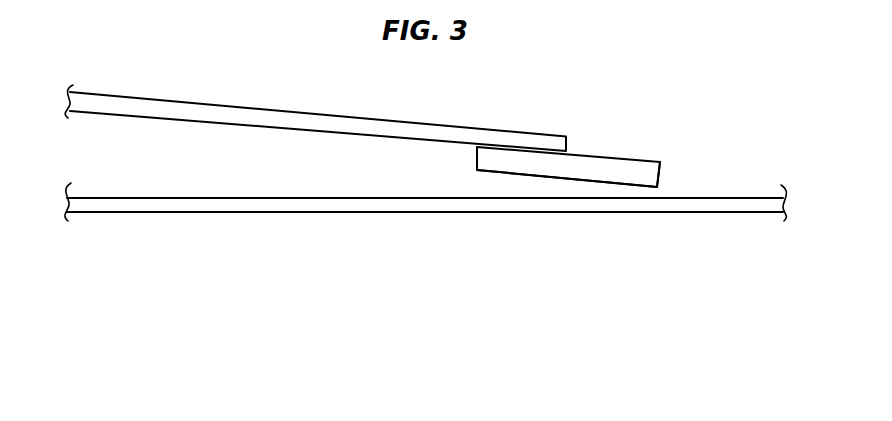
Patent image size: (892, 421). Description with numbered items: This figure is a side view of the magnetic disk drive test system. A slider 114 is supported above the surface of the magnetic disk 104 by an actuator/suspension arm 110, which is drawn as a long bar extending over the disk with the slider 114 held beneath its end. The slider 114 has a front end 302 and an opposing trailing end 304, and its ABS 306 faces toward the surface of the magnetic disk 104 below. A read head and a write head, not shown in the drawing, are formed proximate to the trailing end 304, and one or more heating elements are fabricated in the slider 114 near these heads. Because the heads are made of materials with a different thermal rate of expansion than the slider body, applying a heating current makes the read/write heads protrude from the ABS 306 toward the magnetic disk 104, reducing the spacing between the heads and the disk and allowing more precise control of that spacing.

The magnetic disk 104 is at (418, 205).
The actuator/suspension arm 110 is at (270, 114).
The slider 114 is at (610, 162).
The front end 302 is at (469, 157).
The trailing end 304 is at (667, 173).
The ABS 306 is at (527, 177).